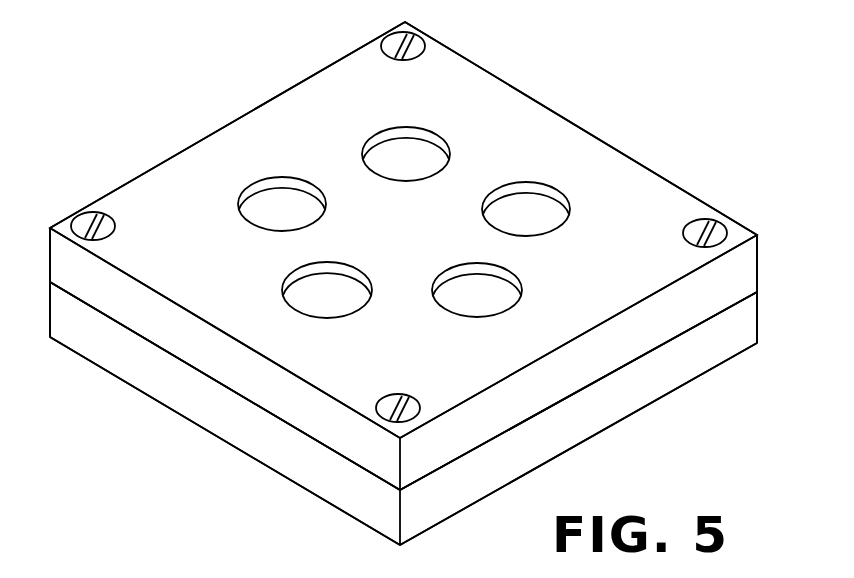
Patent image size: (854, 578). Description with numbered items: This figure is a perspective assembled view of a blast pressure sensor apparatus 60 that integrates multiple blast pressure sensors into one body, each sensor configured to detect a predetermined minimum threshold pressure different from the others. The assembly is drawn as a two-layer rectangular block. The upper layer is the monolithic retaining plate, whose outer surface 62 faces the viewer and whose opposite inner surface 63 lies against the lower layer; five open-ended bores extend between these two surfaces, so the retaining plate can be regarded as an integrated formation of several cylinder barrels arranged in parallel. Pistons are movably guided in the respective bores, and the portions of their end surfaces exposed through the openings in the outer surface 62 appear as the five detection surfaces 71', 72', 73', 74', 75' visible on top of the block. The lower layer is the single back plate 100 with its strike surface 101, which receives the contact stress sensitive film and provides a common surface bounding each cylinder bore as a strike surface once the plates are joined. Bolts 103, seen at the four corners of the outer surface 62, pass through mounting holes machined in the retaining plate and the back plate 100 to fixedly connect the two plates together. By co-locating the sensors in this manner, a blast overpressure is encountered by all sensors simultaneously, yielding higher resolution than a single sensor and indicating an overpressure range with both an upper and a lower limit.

The blast pressure sensor apparatus 60 is at (593, 97).
The outer surface 62 is at (637, 287).
The inner surface 63 is at (218, 383).
The back plate 100 is at (690, 365).
The strike surface 101 is at (278, 420).
The bolts 103 is at (428, 42).
The detection surface 71' is at (421, 133).
The detection surface 72' is at (537, 187).
The detection surface 73' is at (449, 313).
The detection surface 74' is at (291, 284).
The detection surface 75' is at (282, 179).